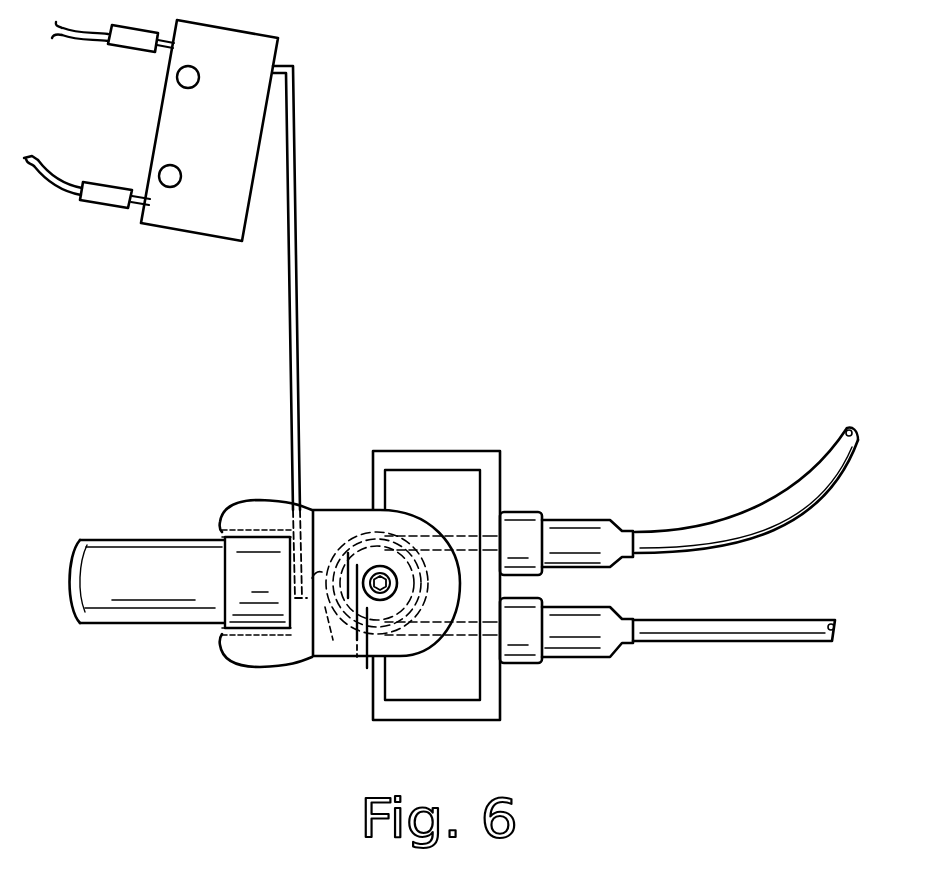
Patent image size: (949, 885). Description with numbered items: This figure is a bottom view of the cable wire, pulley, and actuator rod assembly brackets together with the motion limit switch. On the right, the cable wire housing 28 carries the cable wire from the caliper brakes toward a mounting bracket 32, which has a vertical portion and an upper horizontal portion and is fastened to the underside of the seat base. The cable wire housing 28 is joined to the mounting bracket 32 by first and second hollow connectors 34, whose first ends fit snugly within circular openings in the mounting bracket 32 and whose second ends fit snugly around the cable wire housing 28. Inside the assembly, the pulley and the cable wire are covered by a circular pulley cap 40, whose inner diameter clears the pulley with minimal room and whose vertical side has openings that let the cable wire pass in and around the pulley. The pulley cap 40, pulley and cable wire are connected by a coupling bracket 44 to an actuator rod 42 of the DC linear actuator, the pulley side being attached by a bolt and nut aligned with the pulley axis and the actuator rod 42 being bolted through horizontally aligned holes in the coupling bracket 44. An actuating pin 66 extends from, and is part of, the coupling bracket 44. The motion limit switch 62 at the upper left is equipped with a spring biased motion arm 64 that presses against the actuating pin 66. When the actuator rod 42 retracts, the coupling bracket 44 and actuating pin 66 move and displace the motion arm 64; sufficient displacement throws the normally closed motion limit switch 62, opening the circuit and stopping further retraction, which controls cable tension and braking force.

The cable wire housing 28 is at (708, 552).
The mounting bracket 32 is at (442, 451).
The first and second hollow connectors 34 is at (597, 568).
The circular pulley cap 40 is at (386, 519).
The actuator rod 42 is at (165, 592).
The coupling bracket 44 is at (339, 509).
The motion limit switch 62 is at (220, 146).
The motion arm 64 is at (297, 307).
The actuating pin 66 is at (333, 642).